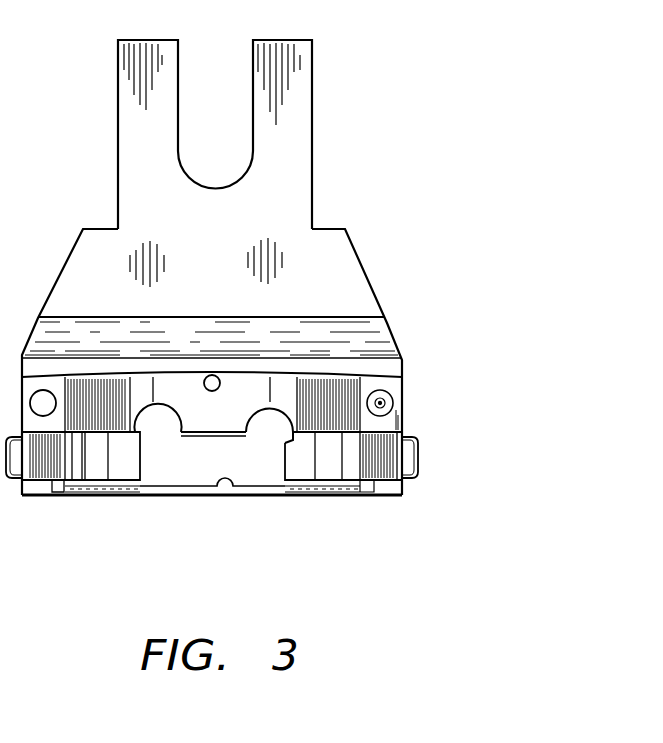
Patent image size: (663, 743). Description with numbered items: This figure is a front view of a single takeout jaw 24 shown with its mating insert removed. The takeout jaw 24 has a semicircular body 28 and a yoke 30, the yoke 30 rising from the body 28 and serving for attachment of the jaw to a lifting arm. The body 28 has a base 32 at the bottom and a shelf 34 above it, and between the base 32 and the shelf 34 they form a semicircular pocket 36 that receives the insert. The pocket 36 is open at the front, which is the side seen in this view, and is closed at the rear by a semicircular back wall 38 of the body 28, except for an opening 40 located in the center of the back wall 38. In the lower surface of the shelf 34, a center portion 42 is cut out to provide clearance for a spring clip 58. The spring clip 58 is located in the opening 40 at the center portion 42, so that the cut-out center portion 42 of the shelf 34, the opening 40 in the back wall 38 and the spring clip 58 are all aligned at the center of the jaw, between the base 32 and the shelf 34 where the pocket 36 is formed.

The takeout jaw 24 is at (492, 156).
The semicircular body 28 is at (333, 229).
The yoke 30 is at (118, 90).
The base 32 is at (331, 496).
The shelf 34 is at (335, 403).
The semicircular pocket 36 is at (335, 460).
The semicircular back wall 38 is at (92, 468).
The opening 40 is at (226, 490).
The center portion 42 is at (278, 405).
The spring clip 58 is at (205, 438).